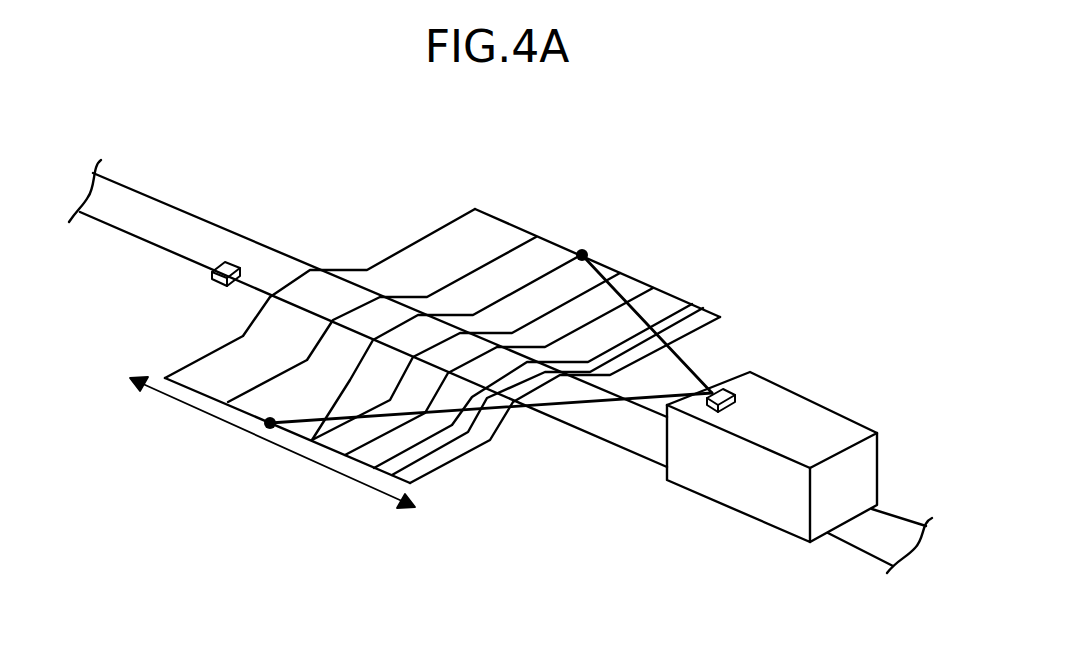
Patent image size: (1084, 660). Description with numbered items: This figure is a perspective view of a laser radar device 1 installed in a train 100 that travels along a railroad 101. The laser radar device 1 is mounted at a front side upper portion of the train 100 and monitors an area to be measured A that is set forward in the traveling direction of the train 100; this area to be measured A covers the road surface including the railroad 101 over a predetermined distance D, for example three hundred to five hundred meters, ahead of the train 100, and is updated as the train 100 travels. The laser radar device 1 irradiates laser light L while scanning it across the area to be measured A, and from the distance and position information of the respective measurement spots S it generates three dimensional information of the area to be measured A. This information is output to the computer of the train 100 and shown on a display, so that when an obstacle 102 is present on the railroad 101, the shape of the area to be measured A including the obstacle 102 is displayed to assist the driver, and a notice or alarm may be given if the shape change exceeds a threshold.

The laser radar device 1 is at (724, 383).
The train 100 is at (802, 417).
The railroad 101 is at (158, 199).
The obstacle 102 is at (210, 275).
The area to be measured A is at (498, 232).
The measurement spot S is at (582, 252).
The laser light L is at (618, 289).
The predetermined distance D is at (240, 430).